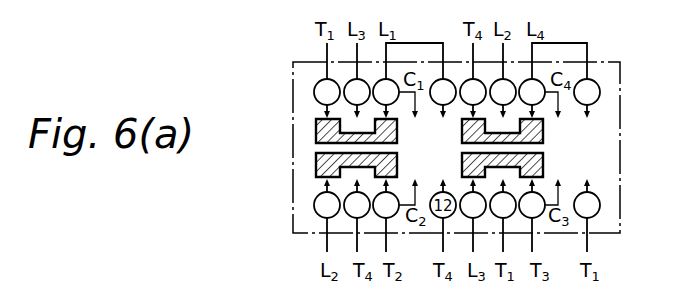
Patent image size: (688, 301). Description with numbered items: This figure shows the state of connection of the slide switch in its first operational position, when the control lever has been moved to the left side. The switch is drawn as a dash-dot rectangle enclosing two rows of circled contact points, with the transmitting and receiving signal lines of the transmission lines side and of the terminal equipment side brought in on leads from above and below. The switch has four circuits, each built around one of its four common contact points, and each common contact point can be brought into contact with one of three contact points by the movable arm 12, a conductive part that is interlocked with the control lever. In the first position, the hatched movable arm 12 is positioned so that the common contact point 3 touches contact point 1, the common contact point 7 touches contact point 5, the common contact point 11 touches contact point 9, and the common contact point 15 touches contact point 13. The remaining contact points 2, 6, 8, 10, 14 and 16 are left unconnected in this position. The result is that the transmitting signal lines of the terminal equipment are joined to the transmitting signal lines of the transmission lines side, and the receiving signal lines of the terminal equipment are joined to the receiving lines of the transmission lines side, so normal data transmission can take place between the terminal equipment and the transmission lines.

The movable arm 12 is at (316, 131).
The contact point 1 is at (327, 80).
The contact point 2 is at (357, 80).
The common contact point 3 is at (394, 80).
The contact point 5 is at (473, 80).
The contact point 6 is at (503, 80).
The common contact point 7 is at (539, 80).
The contact point 8 is at (579, 80).
The contact point 9 is at (327, 215).
The contact point 10 is at (357, 215).
The common contact point 11 is at (386, 215).
The contact point 13 is at (473, 215).
The contact point 14 is at (503, 215).
The common contact point 15 is at (532, 215).
The contact point 16 is at (587, 215).